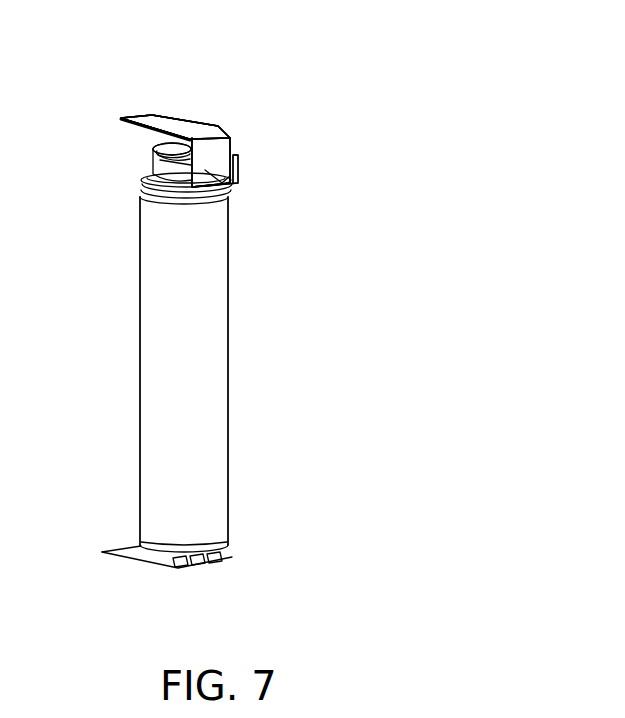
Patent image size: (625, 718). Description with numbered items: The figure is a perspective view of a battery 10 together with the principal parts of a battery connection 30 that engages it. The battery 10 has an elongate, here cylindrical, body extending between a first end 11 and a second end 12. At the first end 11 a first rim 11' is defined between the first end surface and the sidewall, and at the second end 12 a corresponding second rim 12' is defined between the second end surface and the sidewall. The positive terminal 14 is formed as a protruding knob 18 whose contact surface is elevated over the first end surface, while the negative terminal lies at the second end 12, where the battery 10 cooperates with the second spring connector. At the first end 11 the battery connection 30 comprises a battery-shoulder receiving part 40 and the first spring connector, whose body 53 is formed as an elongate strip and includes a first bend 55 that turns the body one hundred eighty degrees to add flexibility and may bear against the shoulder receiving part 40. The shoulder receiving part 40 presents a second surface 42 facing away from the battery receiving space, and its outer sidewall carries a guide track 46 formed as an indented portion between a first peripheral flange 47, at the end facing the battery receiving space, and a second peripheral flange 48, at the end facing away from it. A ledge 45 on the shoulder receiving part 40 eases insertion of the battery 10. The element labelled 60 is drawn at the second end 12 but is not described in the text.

The battery connection 30 is at (266, 89).
The body 53 is at (170, 121).
The second surface 42 is at (125, 120).
The second peripheral flange 48 is at (155, 152).
The guide track 46 is at (165, 168).
The first peripheral flange 47 is at (142, 186).
The ledge 45 is at (163, 192).
The first bend 55 is at (220, 140).
The battery-shoulder receiving part 40 is at (240, 172).
The first rim 11' is at (221, 180).
The first end 11 is at (218, 213).
The positive terminal 14 is at (197, 190).
The protruding knob 18 is at (197, 190).
The battery 10 is at (215, 342).
The second end 12 is at (214, 531).
The second rim 12' is at (231, 565).
The base 60 is at (143, 563).